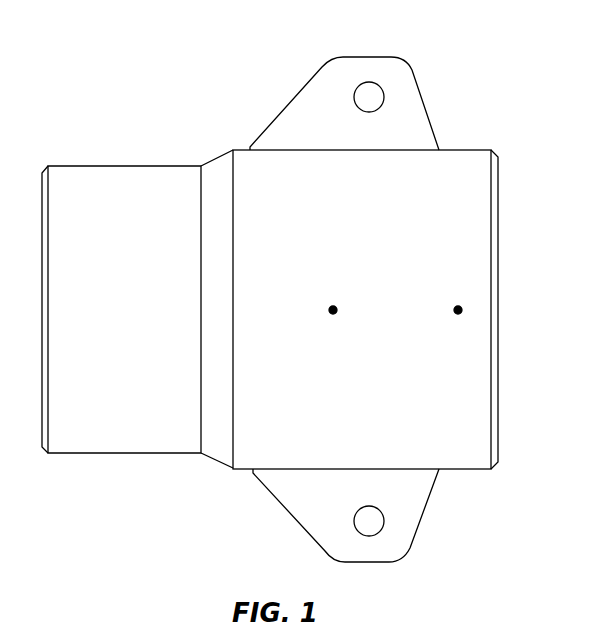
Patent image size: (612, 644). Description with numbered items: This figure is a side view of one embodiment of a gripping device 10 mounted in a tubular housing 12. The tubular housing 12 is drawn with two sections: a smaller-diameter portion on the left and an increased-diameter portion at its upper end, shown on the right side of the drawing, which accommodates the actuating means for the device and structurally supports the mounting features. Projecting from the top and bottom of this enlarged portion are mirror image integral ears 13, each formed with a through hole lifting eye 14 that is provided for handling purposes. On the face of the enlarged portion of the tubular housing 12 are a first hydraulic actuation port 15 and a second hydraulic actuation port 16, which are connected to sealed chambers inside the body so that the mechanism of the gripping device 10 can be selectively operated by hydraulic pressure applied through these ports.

The gripping device 10 is at (137, 73).
The tubular housing 12 is at (98, 166).
The integral ears 13 is at (406, 63).
The through hole lifting eyes 14 is at (383, 524).
The first hydraulic actuation port 15 is at (333, 310).
The second hydraulic actuation port 16 is at (458, 310).